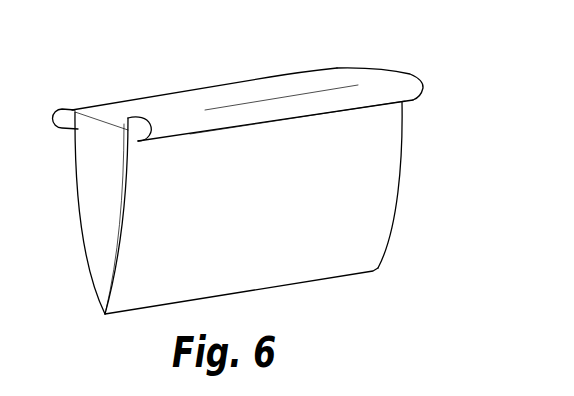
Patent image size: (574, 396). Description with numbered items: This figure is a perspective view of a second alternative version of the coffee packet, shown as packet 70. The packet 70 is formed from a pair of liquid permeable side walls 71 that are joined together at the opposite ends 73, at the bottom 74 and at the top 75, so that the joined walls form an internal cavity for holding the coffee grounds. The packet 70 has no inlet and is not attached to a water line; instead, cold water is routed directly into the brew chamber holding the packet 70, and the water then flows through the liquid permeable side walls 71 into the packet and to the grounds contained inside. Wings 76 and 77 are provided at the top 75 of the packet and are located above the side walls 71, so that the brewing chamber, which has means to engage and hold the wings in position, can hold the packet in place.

The packet 70 is at (232, 230).
The liquid permeable side walls 71 is at (78, 165).
The opposite ends 73 is at (395, 210).
The bottom 74 is at (362, 275).
The top 75 is at (234, 78).
The wing 76 is at (64, 117).
The wing 77 is at (393, 97).